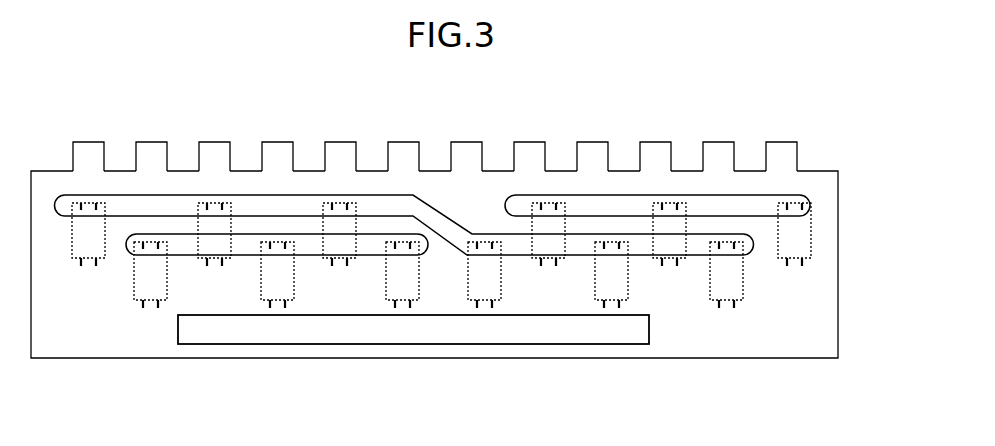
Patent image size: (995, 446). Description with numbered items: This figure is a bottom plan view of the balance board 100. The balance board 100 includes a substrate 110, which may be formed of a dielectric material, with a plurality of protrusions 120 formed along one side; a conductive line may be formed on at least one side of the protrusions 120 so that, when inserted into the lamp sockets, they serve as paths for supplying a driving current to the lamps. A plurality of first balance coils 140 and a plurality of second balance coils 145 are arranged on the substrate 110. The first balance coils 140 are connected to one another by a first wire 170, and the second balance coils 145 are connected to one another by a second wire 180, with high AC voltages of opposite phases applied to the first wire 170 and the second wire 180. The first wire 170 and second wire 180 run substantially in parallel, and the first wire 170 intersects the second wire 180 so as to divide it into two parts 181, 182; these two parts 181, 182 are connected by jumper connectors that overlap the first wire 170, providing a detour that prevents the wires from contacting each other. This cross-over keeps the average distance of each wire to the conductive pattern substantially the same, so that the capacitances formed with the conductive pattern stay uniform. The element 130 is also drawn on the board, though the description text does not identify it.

The balance board 100 is at (323, 369).
The substrate 110 is at (808, 327).
The protrusions 120 is at (88, 150).
The connector 130 is at (223, 344).
The first balance coils 140 is at (88, 250).
The second balance coils 145 is at (153, 282).
The first wire 170 is at (308, 212).
The second wire 180 is at (452, 98).
The part of second wire 181 is at (385, 247).
The part of second wire 182 is at (533, 207).